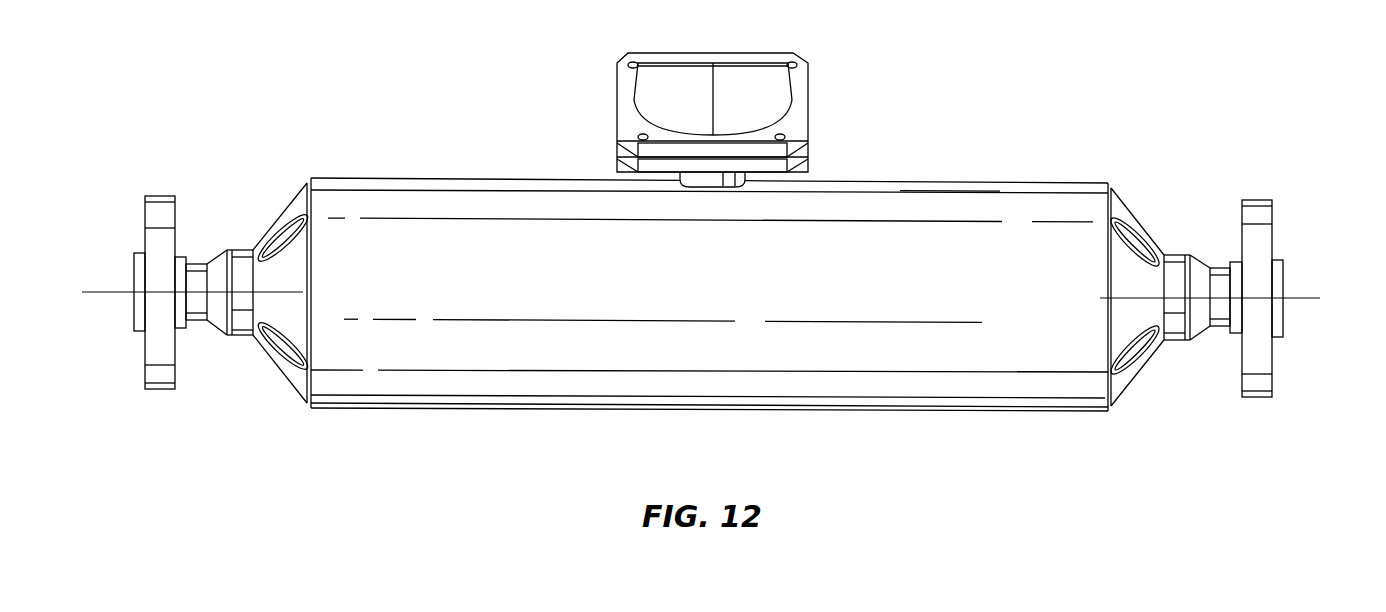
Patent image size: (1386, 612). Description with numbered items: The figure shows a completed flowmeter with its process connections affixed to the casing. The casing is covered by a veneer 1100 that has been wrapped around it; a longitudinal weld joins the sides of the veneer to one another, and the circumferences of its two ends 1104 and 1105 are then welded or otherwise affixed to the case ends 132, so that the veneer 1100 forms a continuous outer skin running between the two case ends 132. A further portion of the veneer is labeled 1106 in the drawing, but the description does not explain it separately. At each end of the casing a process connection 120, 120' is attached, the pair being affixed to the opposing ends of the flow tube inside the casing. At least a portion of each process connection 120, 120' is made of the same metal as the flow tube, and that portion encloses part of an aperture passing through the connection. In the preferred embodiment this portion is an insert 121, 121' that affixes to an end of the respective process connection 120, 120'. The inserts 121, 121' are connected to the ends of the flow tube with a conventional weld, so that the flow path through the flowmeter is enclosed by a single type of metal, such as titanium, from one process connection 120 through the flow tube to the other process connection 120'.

The veneer 1100 is at (510, 197).
The end of veneer 1105 is at (318, 177).
The end of veneer 1104 is at (1108, 182).
The housing wall 1106 is at (960, 193).
The case ends 132 is at (273, 363).
The process connection 120 is at (185, 262).
The insert 121 is at (141, 320).
The process connection 120' is at (1284, 269).
The insert 121' is at (1288, 291).